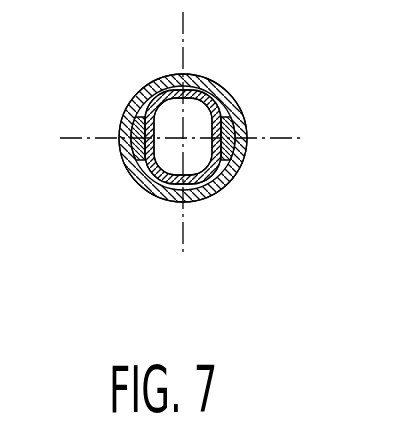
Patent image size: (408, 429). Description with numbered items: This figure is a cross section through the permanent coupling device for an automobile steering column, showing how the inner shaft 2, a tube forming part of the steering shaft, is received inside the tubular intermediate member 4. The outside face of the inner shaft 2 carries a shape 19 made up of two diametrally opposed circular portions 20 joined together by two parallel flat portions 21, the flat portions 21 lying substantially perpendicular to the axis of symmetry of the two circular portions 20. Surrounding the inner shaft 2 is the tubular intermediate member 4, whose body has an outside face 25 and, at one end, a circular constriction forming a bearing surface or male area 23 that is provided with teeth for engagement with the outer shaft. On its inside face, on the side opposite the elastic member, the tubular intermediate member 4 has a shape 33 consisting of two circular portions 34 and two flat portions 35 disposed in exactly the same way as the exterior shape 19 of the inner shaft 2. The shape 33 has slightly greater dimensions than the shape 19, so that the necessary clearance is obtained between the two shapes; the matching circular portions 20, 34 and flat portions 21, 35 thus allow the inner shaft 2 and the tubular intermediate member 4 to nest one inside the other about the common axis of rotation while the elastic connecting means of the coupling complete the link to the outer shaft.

The inner shaft 2 is at (130, 107).
The tubular intermediate member 4 is at (140, 193).
The shape 19 is at (146, 114).
The circular portions 20 is at (170, 90).
The flat portions 21 is at (140, 119).
The male area 23 is at (222, 83).
The outside face 25 is at (125, 173).
The shape 33 is at (228, 113).
The circular portions 34 is at (195, 88).
The flat portions 35 is at (132, 150).